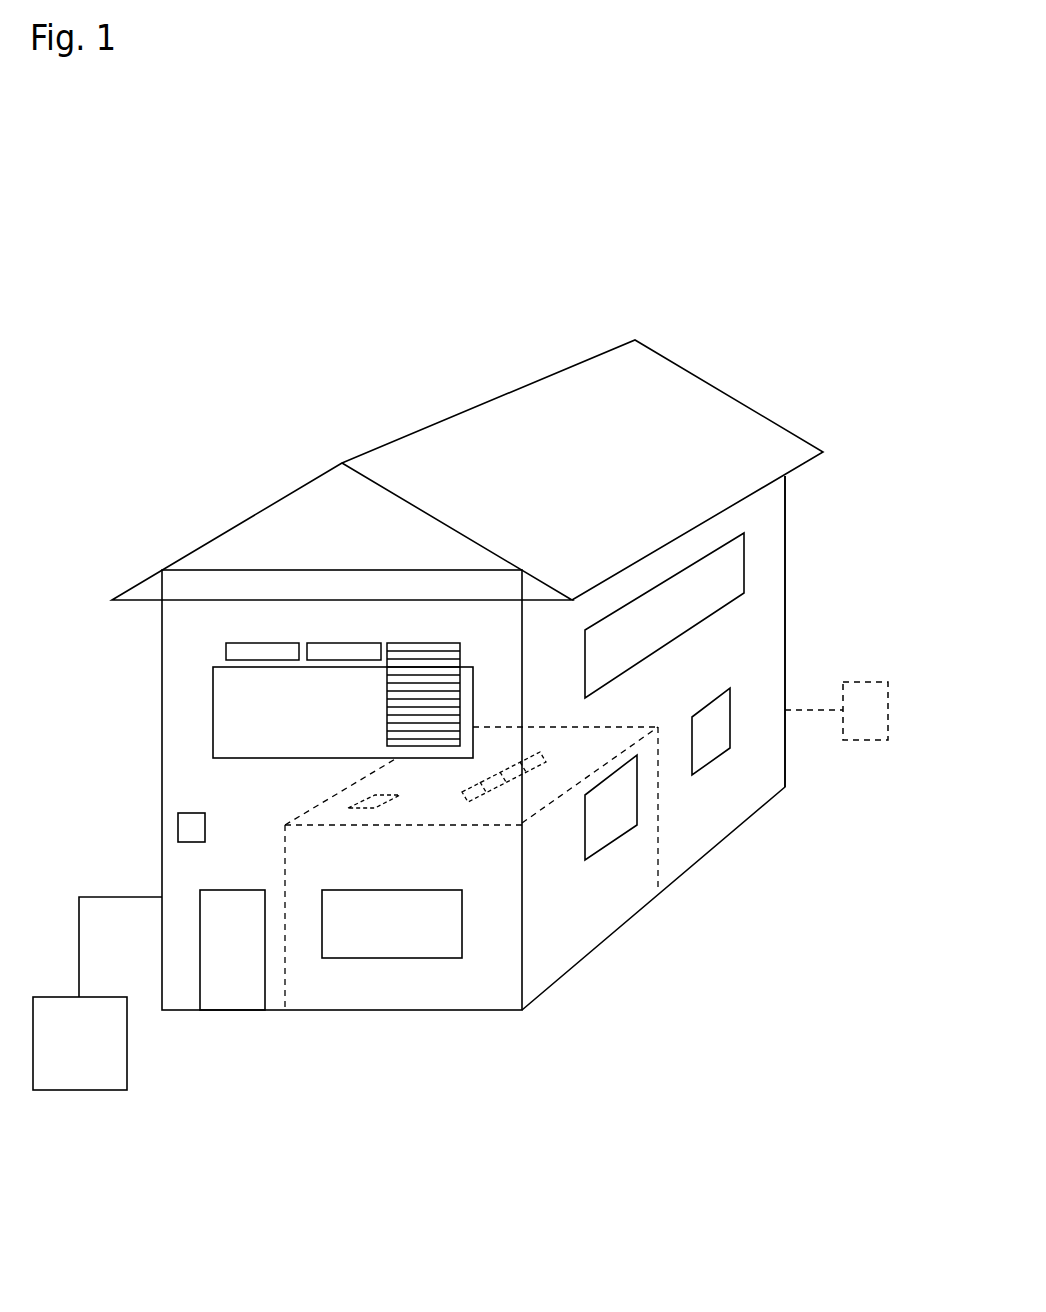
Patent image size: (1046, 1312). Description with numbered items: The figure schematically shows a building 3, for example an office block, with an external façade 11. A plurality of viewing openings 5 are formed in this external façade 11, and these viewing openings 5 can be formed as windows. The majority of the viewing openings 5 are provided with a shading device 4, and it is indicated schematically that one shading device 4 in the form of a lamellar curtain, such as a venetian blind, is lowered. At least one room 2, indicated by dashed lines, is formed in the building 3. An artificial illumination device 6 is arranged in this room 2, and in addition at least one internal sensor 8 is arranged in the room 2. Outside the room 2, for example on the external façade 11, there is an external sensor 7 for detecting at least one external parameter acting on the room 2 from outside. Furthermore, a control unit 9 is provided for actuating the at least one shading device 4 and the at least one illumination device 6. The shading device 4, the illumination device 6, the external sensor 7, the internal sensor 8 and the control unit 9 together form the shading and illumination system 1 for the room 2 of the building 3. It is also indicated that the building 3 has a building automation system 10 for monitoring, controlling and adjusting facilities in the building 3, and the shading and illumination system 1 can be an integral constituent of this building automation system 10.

The shading and illumination system 1 is at (407, 1145).
The room 2 is at (493, 983).
The building 3 is at (793, 262).
The shading device 4 is at (423, 653).
The viewing openings 5 is at (228, 713).
The illumination device 6 is at (500, 773).
The external sensor 7 is at (192, 828).
The internal sensor 8 is at (373, 806).
The control unit 9 is at (98, 1058).
The building automation system 10 is at (863, 722).
The external façade 11 is at (767, 635).